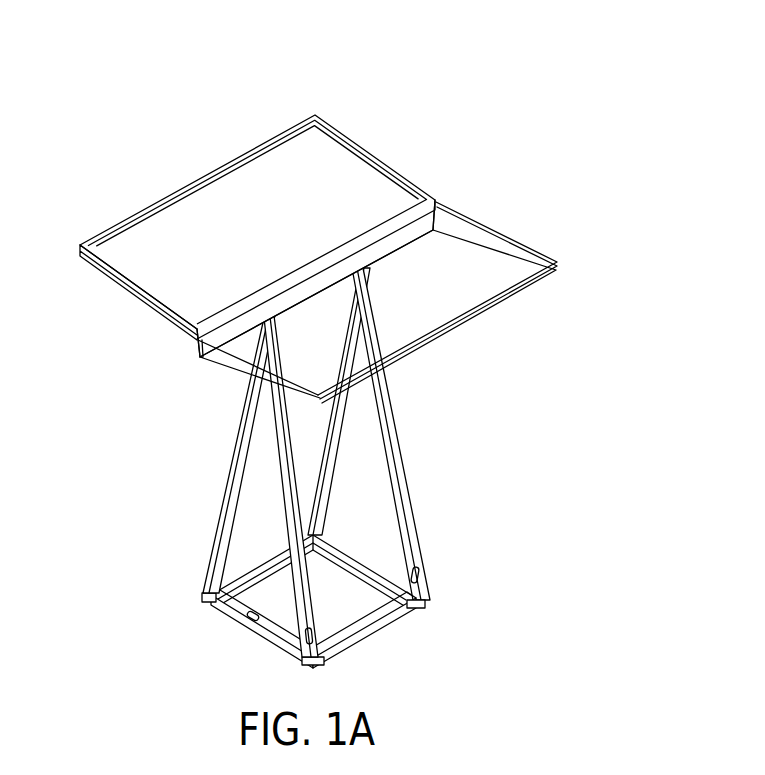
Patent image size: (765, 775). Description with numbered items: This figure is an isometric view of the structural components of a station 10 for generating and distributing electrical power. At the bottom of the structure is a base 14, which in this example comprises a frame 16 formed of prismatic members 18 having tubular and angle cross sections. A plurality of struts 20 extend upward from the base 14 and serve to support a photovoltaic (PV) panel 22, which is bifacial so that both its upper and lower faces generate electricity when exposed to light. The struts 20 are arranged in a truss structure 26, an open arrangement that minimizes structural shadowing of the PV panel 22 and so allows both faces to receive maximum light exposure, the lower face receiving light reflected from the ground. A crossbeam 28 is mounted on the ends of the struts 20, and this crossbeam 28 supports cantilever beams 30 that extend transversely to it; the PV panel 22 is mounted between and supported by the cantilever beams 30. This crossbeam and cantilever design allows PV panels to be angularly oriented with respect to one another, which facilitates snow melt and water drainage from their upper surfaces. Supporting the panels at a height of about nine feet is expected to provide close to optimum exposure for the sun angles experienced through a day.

The station 10 is at (313, 343).
The base 14 is at (380, 618).
The frame 16 is at (258, 615).
The prismatic members 18 is at (367, 568).
The struts 20 is at (390, 433).
The photovoltaic (PV) panel 22 is at (318, 192).
The truss structure 26 is at (174, 470).
The crossbeam 28 is at (197, 350).
The cantilever beams 30 is at (160, 312).